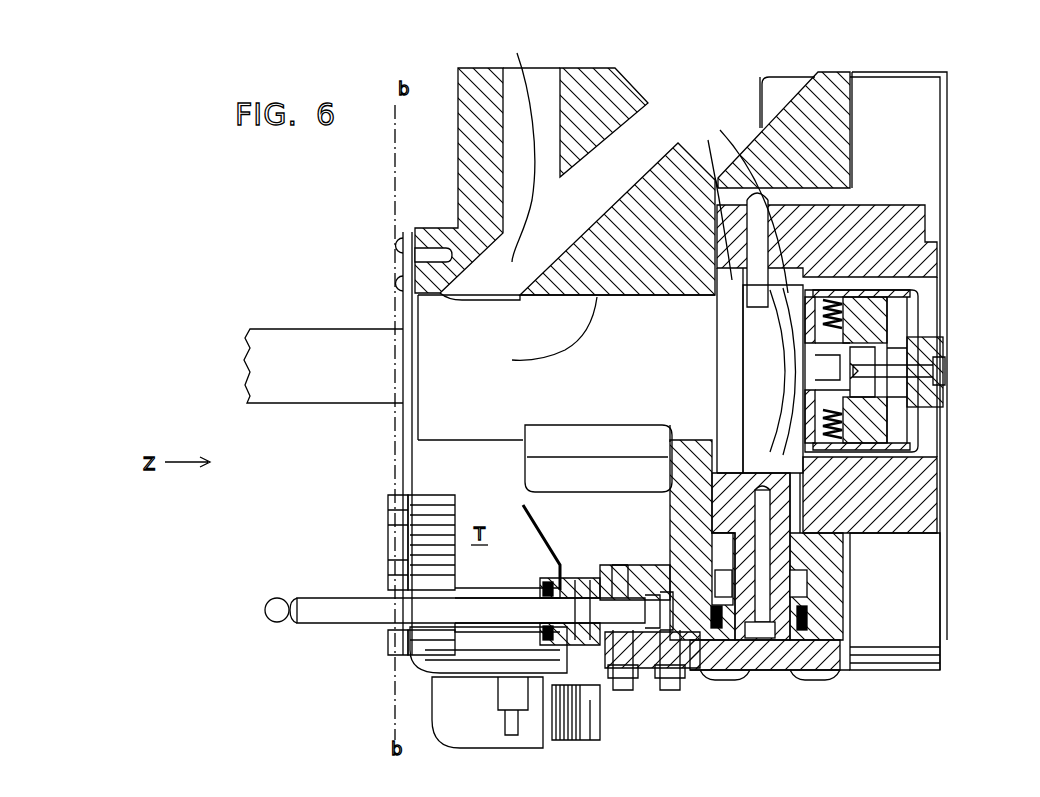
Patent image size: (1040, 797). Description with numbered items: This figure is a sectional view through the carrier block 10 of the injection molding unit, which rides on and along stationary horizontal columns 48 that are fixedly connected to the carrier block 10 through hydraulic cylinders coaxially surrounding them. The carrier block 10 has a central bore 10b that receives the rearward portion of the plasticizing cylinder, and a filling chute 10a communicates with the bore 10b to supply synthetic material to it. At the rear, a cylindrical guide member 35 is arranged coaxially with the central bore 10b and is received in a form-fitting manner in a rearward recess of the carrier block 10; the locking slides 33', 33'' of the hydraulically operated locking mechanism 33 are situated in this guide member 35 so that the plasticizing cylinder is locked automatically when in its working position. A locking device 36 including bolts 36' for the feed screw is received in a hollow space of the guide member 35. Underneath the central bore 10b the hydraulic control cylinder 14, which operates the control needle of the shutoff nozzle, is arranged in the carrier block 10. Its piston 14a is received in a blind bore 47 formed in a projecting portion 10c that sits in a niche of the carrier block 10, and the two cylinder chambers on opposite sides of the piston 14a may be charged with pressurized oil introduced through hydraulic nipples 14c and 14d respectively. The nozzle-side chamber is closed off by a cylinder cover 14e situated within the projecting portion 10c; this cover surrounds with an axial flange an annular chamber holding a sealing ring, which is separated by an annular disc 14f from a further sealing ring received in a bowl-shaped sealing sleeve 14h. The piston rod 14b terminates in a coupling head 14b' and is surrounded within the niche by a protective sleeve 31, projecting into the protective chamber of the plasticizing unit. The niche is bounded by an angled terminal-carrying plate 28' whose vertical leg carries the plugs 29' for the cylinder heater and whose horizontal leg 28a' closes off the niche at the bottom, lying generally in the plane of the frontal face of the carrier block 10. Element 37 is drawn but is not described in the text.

The carrier block 10 is at (649, 81).
The filling chute 10a is at (512, 143).
The central bore 10b is at (512, 432).
The projecting portion 10c is at (668, 568).
The hydraulic control cylinder 14 is at (649, 697).
The piston 14a is at (725, 645).
The piston rod 14b is at (467, 642).
The coupling head 14b' is at (253, 634).
The hydraulic nipple 14c is at (621, 692).
The hydraulic nipple 14d is at (673, 692).
The cylinder cover 14e is at (597, 578).
The annular disc 14f is at (578, 578).
The bowl-shaped sealing sleeve 14h is at (545, 588).
The angled terminal-carrying plate 28' is at (389, 575).
The horizontal leg 28a' is at (516, 731).
The plugs 29' is at (378, 571).
The protective sleeve 31 is at (472, 642).
The hydraulically operated locking mechanism 33 is at (720, 333).
The locking slide 33' is at (738, 185).
The locking slide 33'' is at (718, 513).
The cylindrical guide member 35 is at (900, 238).
The locking device 36 is at (908, 371).
The bolts 36' is at (907, 398).
The cover 37 is at (536, 530).
The blind bore 47 is at (620, 565).
The stationary horizontal columns 48 is at (320, 390).